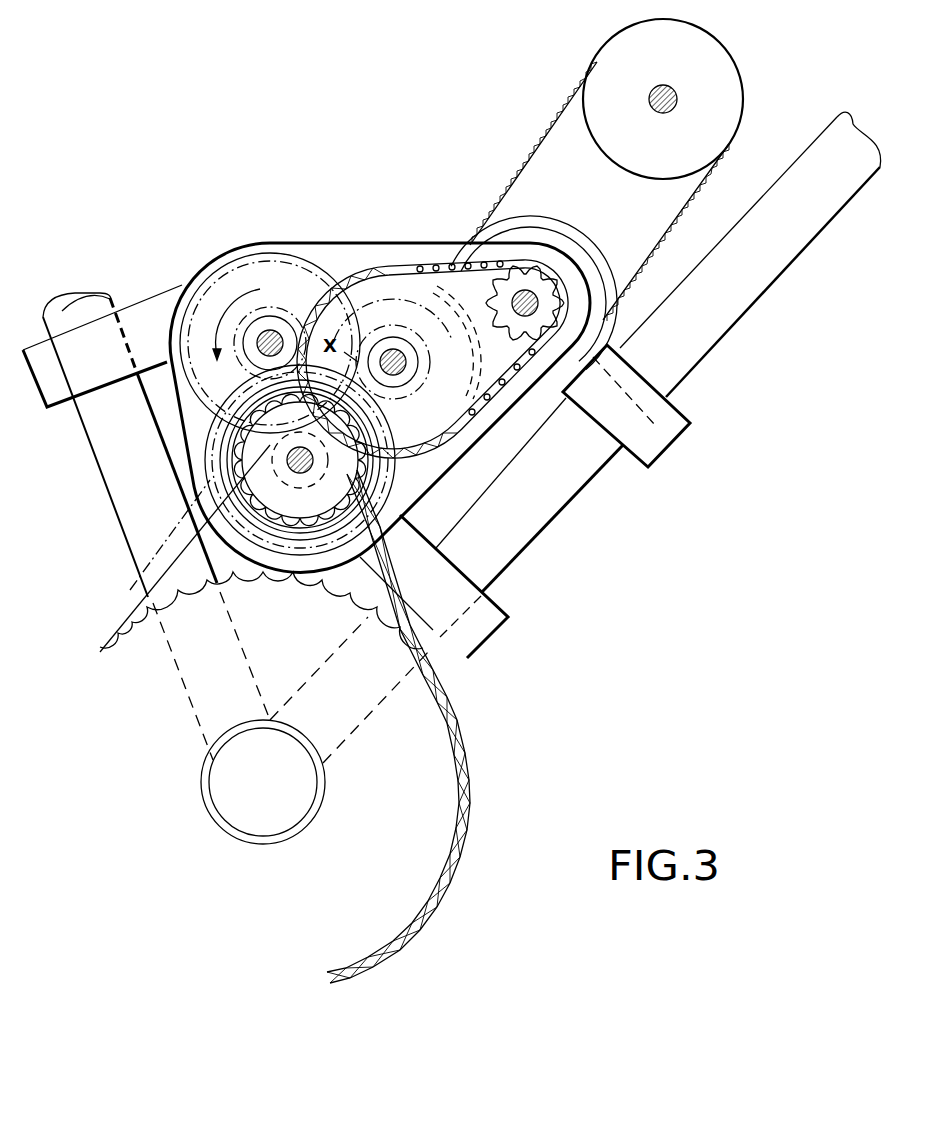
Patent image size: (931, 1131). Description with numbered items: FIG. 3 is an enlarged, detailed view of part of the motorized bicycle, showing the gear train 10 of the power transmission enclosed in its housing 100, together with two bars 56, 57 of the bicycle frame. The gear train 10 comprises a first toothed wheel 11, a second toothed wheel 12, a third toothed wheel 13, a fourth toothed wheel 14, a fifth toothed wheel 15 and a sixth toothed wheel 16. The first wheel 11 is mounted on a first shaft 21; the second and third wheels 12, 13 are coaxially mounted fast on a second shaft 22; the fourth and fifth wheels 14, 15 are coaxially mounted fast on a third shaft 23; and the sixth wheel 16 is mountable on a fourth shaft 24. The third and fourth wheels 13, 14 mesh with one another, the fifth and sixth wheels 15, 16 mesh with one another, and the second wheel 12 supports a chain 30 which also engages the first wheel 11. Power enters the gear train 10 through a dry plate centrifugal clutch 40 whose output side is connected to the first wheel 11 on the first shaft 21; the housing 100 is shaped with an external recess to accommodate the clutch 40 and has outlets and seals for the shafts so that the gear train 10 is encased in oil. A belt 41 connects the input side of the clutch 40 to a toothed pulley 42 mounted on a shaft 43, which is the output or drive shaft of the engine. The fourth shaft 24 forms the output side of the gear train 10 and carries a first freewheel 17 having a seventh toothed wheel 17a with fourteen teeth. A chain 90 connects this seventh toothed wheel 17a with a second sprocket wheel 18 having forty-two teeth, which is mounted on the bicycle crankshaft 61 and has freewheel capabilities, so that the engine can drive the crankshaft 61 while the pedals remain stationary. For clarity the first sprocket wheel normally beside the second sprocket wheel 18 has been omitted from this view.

The gear train 10 is at (360, 226).
The housing 100 is at (286, 241).
The fourth toothed wheel 14 is at (256, 272).
The fifth toothed wheel 15 is at (279, 330).
The third shaft 23 is at (266, 352).
The bar 56 is at (74, 318).
The crankshaft 61 is at (290, 777).
The sixth toothed wheel 16 is at (232, 505).
The first freewheel 17 is at (290, 472).
The seventh toothed wheel 17a is at (240, 470).
The fourth shaft 24 is at (310, 470).
The third toothed wheel 13 is at (412, 378).
The second shaft 22 is at (395, 378).
The first shaft 21 is at (512, 300).
The second toothed wheel 12 is at (468, 432).
The chain 30 is at (447, 262).
The first toothed wheel 11 is at (548, 340).
The centrifugal clutch 40 is at (582, 238).
The belt 41 is at (708, 183).
The toothed pulley 42 is at (719, 126).
The shaft 43 is at (672, 90).
The bar 57 is at (560, 488).
The chain 90 is at (447, 642).
The second sprocket wheel 18 is at (382, 877).